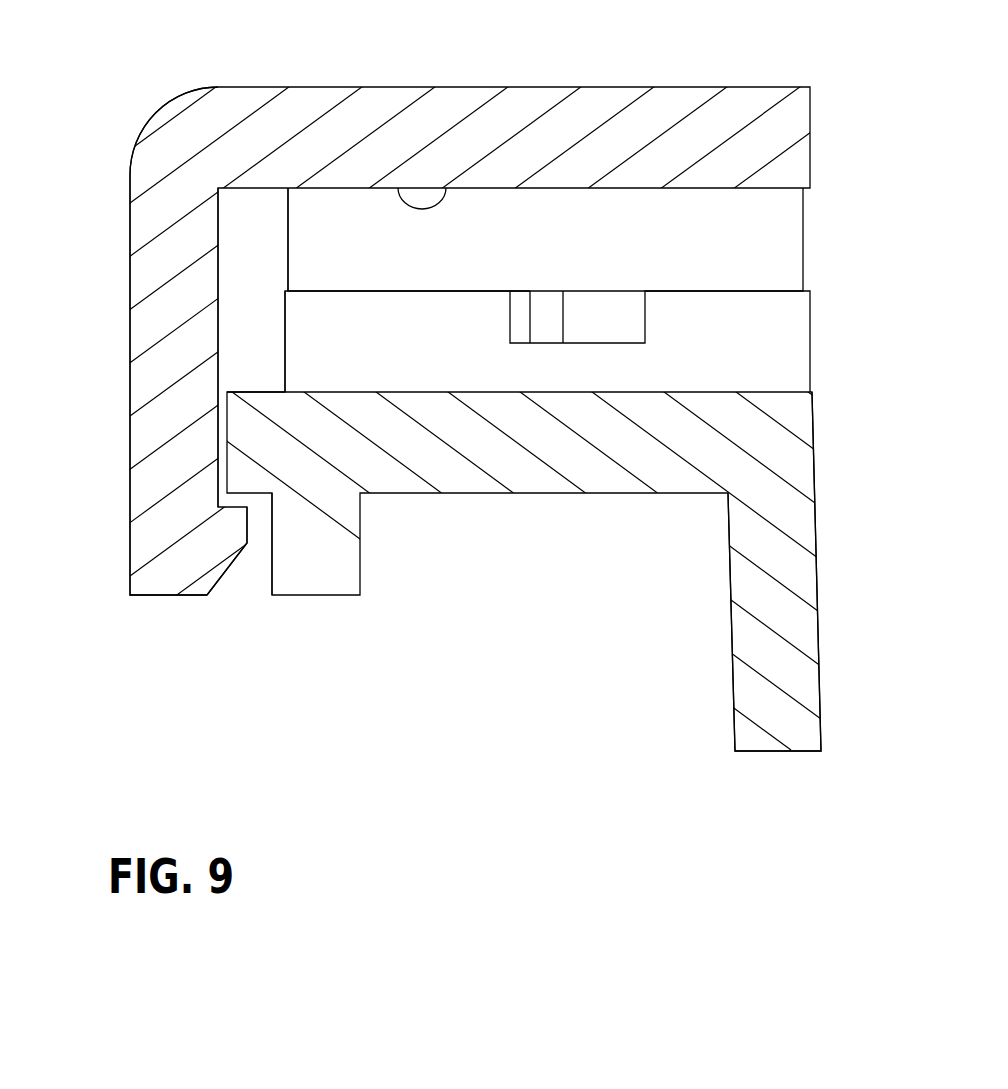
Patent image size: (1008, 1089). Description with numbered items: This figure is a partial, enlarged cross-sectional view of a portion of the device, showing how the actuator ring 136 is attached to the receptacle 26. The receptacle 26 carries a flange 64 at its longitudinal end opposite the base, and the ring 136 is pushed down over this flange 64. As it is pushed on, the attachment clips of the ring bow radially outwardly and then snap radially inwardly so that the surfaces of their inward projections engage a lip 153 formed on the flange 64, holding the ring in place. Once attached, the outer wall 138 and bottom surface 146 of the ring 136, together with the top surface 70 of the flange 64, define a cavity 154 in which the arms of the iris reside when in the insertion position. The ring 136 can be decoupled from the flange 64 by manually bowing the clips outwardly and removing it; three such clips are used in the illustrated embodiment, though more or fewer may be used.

The ring 136 is at (757, 87).
The outer wall 138 is at (140, 138).
The cavity 154 is at (263, 233).
The bottom surface 146 is at (446, 190).
The top surface of flange 70 is at (262, 388).
The flange 64 is at (475, 494).
The receptacle 26 is at (808, 578).
The lip 153 is at (264, 494).